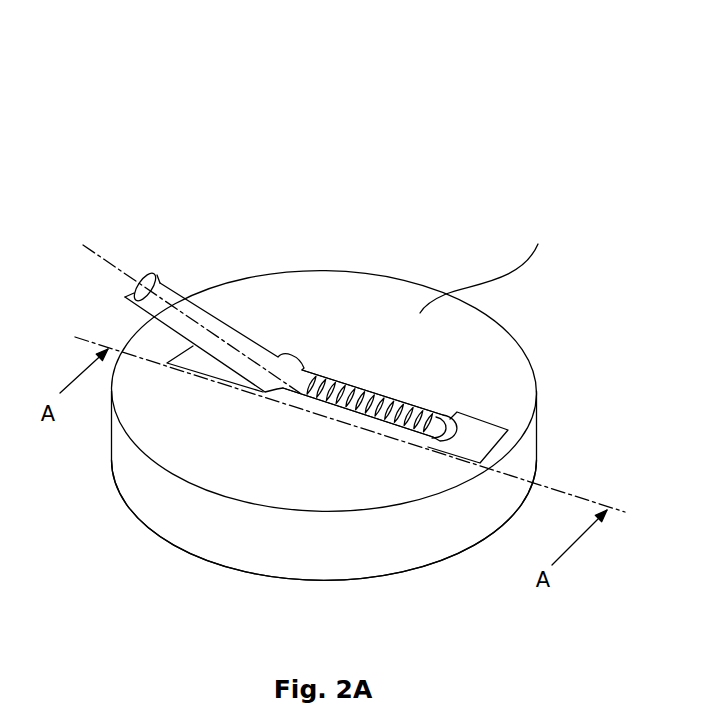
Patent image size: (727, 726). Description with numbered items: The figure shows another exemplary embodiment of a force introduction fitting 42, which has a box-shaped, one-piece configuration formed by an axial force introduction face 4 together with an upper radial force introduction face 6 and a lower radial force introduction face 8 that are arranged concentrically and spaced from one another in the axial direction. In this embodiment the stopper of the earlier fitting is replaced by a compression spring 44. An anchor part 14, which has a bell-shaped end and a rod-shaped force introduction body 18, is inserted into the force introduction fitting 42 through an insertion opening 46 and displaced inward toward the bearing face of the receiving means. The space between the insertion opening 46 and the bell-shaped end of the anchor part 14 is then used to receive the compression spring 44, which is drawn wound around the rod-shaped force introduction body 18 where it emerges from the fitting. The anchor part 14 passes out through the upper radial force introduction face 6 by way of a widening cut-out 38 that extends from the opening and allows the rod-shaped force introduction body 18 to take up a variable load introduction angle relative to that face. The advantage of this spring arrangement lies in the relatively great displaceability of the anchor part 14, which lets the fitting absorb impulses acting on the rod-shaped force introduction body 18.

The axial force introduction face 4 is at (263, 549).
The upper radial force introduction face 6 is at (484, 262).
The lower radial force introduction face 8 is at (188, 565).
The anchor part 14 is at (173, 279).
The rod-shaped force introduction body 18 is at (245, 335).
The widening cut-out 38 is at (200, 367).
The force introduction fitting 42 is at (358, 167).
The compression spring 44 is at (410, 403).
The insertion opening 46 is at (470, 445).